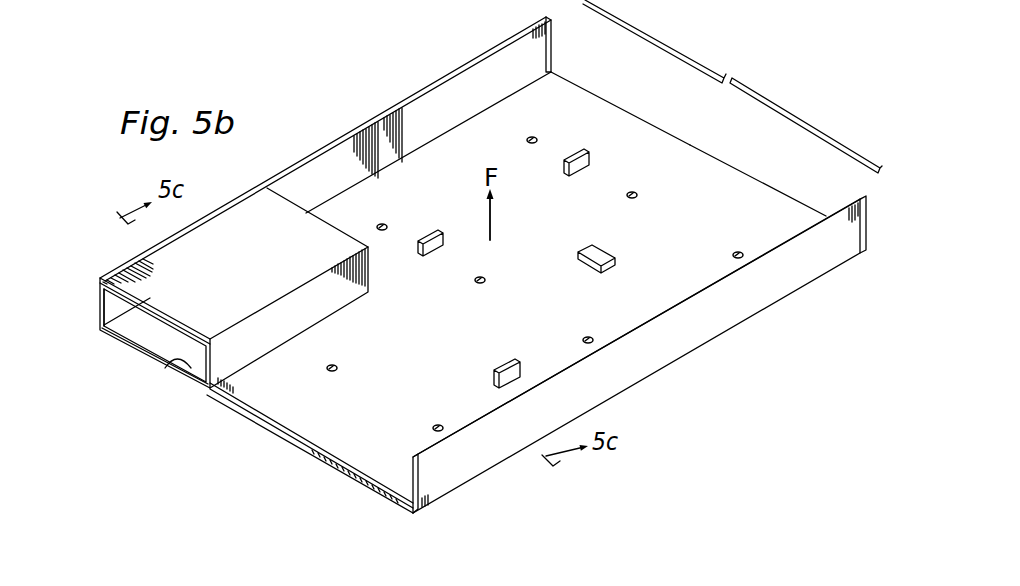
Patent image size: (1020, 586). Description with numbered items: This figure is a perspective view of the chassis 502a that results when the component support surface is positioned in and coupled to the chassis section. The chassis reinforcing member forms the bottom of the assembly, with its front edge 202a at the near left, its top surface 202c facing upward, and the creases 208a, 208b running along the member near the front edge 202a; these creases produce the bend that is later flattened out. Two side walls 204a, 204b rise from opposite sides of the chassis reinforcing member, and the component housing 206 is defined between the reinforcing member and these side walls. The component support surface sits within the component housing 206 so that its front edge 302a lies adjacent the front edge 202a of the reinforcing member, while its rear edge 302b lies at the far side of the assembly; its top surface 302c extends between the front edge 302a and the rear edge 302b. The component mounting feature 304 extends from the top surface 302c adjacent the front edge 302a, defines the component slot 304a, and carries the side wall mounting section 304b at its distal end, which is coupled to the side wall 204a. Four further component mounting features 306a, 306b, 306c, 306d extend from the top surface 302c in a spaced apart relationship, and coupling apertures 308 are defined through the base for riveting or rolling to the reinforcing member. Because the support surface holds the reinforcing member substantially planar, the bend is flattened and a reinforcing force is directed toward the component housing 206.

The chassis 502a is at (328, 92).
The side wall 204a is at (440, 80).
The side wall 204b is at (746, 312).
The component housing 206 is at (733, 79).
The front edge 302a is at (371, 484).
The rear edge 302b is at (735, 163).
The top surface 302c is at (633, 90).
The component mounting feature 304 is at (235, 222).
The component slot 304a is at (137, 331).
The side wall mounting section 304b is at (110, 293).
The front edge 202a is at (253, 420).
The top surface 202c is at (164, 367).
The crease 208a is at (197, 390).
The crease 208b is at (317, 460).
The component mounting feature 306a is at (433, 253).
The component mounting feature 306b is at (582, 174).
The component mounting feature 306c is at (620, 256).
The component mounting feature 306d is at (507, 357).
The coupling apertures 308 is at (537, 137).